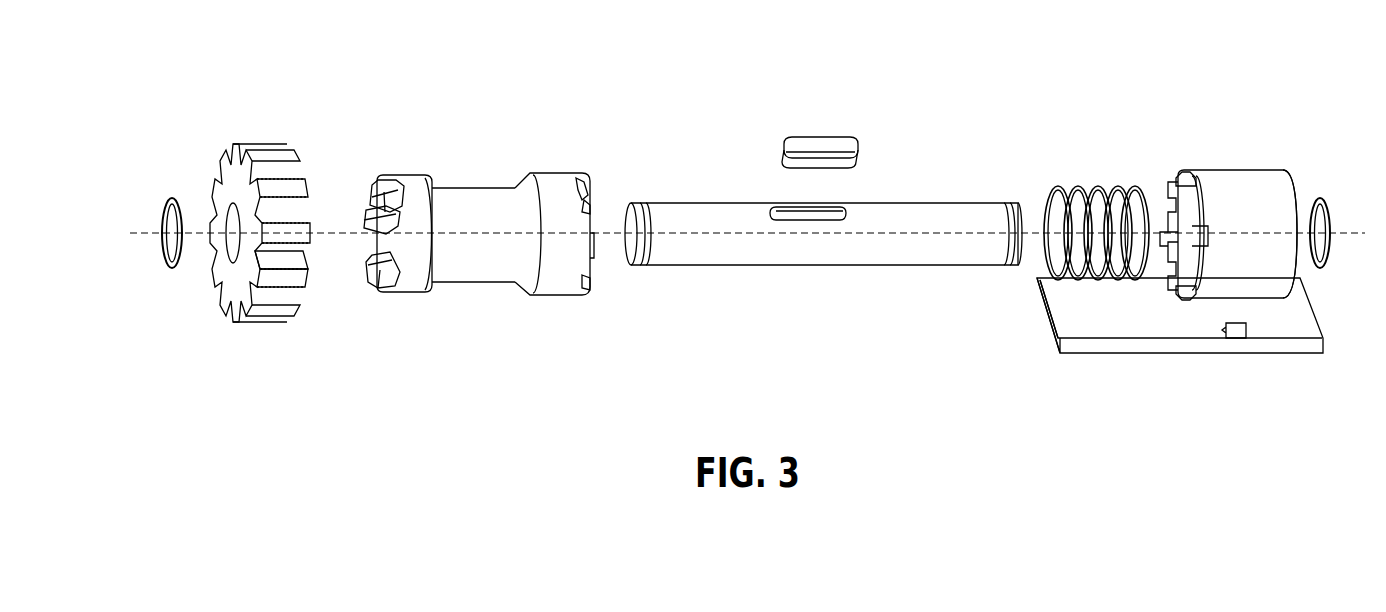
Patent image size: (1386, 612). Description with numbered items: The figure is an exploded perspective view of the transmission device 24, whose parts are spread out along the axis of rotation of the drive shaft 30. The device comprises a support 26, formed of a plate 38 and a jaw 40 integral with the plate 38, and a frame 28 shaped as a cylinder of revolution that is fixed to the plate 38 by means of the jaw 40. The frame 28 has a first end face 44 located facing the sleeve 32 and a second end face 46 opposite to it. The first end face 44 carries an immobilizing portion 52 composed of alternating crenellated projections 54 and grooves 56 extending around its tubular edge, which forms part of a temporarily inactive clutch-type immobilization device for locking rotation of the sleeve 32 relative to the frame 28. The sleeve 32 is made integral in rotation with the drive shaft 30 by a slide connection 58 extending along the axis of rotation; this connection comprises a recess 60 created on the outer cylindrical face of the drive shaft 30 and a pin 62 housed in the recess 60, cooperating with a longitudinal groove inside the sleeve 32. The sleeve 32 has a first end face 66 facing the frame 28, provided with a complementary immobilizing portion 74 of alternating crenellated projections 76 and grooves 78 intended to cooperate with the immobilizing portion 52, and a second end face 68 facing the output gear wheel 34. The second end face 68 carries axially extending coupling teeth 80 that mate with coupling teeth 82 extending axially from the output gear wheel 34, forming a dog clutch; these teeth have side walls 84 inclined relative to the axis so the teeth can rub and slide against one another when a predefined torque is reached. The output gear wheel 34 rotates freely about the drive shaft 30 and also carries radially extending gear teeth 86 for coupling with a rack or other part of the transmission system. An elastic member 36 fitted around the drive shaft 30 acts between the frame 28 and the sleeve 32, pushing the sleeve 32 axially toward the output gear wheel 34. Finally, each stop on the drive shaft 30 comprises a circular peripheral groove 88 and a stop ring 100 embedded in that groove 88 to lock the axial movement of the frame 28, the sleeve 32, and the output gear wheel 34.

The transmission device 24 is at (492, 263).
The support 26 is at (1167, 369).
The frame 28 is at (1232, 247).
The drive shaft 30 is at (823, 174).
The sleeve 32 is at (475, 258).
The output gear wheel 34 is at (230, 240).
The elastic member 36 is at (1078, 187).
The plate 38 is at (1055, 340).
The jaw 40 is at (1237, 340).
The first end face 44 is at (1172, 198).
The second end face 46 is at (1292, 193).
The immobilizing portion 52 is at (1190, 165).
The projections 54 is at (1203, 208).
The grooves 56 is at (1178, 184).
The slide connection 58 is at (812, 110).
The recess 60 is at (774, 206).
The pin 62 is at (806, 146).
The first end face 66 is at (591, 224).
The second end face 68 is at (374, 195).
The complementary immobilizing portion 74 is at (610, 163).
The projections 76 is at (584, 196).
The grooves 78 is at (580, 205).
The coupling teeth 80 is at (404, 190).
The coupling teeth 82 is at (303, 170).
The side walls 84 is at (310, 262).
The gear teeth 86 is at (257, 310).
The circular peripheral groove 88 is at (650, 265).
The stop ring 100 is at (170, 270).